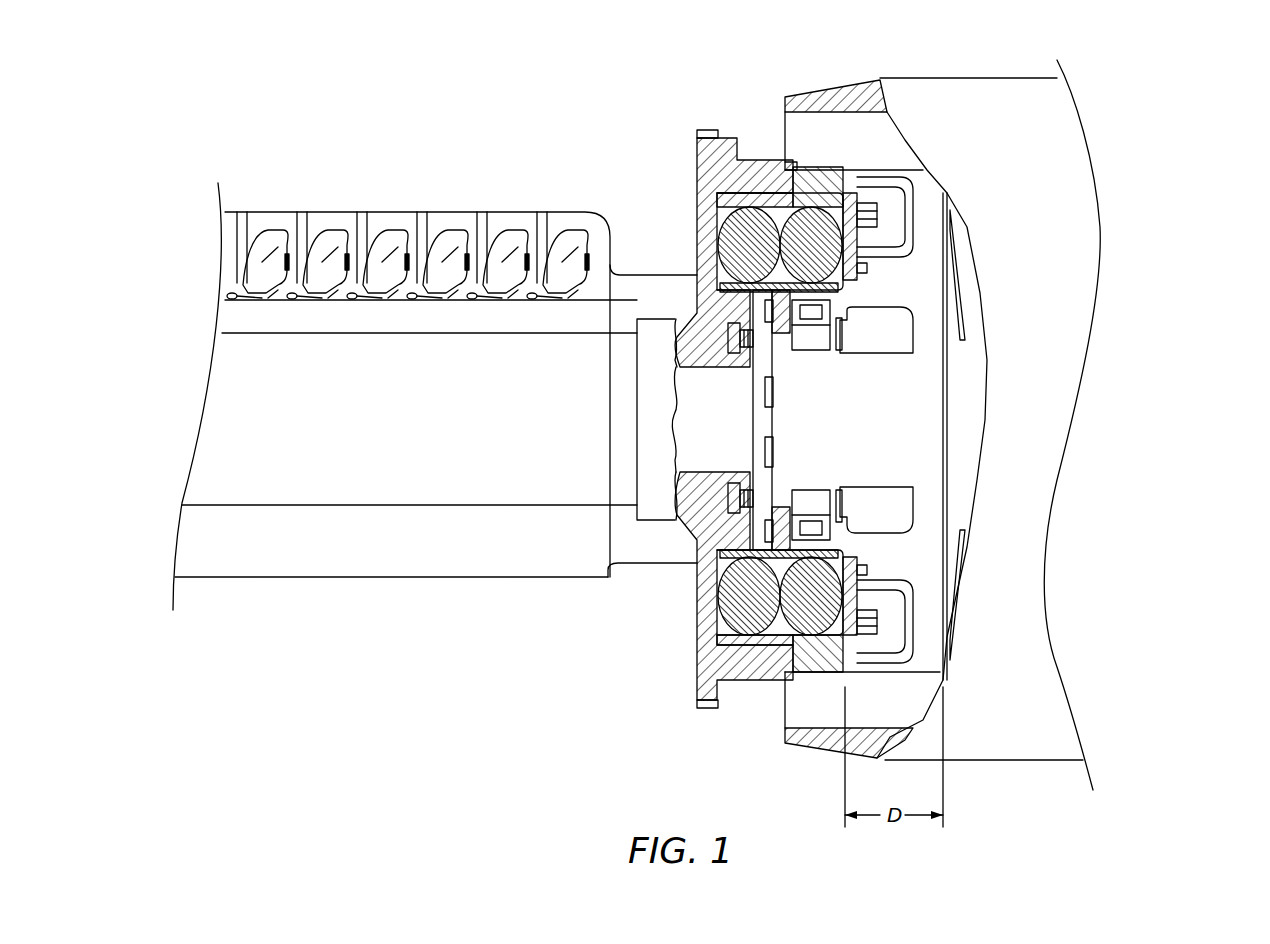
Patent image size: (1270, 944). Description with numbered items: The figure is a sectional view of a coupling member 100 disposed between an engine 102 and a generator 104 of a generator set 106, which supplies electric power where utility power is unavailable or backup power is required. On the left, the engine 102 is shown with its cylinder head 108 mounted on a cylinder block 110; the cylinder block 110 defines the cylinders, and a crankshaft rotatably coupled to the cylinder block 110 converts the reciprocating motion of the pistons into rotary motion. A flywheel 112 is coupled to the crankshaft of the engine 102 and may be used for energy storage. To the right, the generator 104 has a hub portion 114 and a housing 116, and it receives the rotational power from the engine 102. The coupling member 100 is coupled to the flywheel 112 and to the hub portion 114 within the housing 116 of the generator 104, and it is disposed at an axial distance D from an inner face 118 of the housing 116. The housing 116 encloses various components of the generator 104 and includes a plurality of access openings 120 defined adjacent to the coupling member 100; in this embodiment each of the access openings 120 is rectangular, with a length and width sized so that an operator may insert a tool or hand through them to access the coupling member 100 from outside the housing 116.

The coupling member 100 is at (739, 98).
The engine 102 is at (405, 352).
The generator 104 is at (881, 127).
The generator set 106 is at (1170, 122).
The cylinder head 108 is at (452, 225).
The cylinder block 110 is at (464, 578).
The flywheel 112 is at (697, 200).
The hub portion 114 is at (897, 493).
The housing 116 is at (858, 170).
The inner face 118 is at (933, 257).
The access openings 120 is at (900, 185).